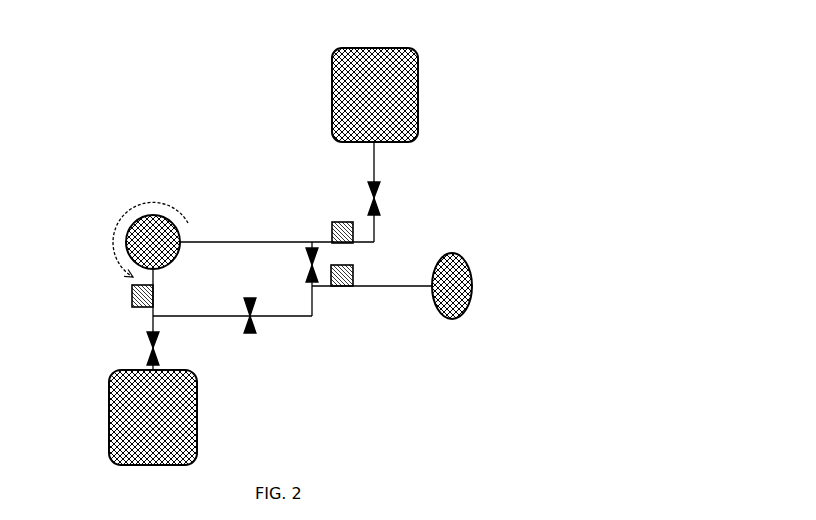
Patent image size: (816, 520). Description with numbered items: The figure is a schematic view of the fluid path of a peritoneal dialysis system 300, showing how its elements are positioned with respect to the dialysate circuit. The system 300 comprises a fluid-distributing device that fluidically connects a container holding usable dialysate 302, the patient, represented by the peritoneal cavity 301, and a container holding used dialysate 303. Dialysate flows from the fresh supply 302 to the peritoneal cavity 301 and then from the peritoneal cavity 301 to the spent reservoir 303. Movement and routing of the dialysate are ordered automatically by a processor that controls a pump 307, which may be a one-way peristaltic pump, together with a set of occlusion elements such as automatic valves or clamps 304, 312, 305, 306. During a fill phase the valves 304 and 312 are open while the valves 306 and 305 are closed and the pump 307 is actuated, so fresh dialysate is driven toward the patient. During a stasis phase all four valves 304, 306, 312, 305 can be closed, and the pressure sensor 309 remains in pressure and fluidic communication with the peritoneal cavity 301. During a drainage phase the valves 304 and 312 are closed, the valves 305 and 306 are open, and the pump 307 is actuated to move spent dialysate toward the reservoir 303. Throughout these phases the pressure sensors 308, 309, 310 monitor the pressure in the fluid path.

The system 300 is at (112, 147).
The peritoneal cavity 301 is at (475, 263).
The container holding usable dialysate 302 is at (428, 92).
The container holding used dialysate 303 is at (102, 445).
The occlusion element 304 is at (385, 193).
The occlusion element 305 is at (143, 348).
The occlusion element 306 is at (303, 262).
The pump 307 is at (195, 225).
The pressure sensor 308 is at (330, 217).
The pressure sensor 309 is at (340, 297).
The pressure sensor 310 is at (127, 297).
The occlusion element 312 is at (252, 338).